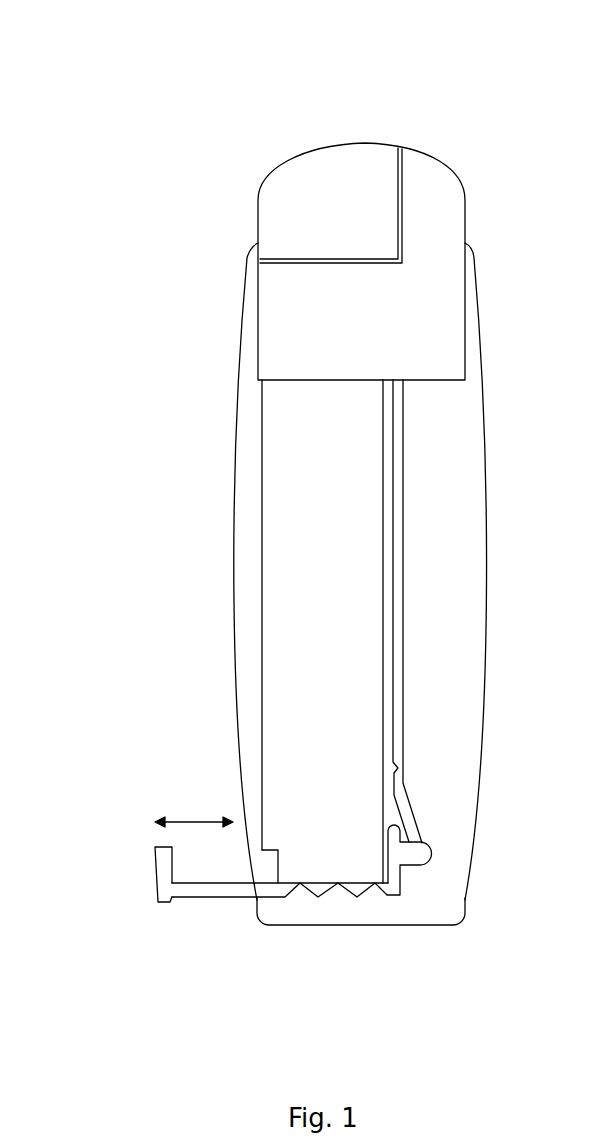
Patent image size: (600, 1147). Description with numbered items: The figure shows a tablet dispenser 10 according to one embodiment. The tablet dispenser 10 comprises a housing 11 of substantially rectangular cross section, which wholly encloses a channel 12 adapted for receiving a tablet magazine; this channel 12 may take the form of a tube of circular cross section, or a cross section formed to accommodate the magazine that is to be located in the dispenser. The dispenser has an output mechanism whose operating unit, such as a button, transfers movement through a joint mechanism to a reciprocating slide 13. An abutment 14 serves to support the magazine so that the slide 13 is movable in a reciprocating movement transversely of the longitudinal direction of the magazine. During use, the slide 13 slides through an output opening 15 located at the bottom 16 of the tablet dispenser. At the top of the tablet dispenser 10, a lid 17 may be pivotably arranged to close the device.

The tablet dispenser 10 is at (101, 110).
The housing 11 is at (235, 484).
The channel 12 is at (294, 445).
The slide 13 is at (166, 888).
The abutment 14 is at (268, 848).
The output opening 15 is at (265, 865).
The bottom 16 is at (335, 910).
The lid 17 is at (301, 225).